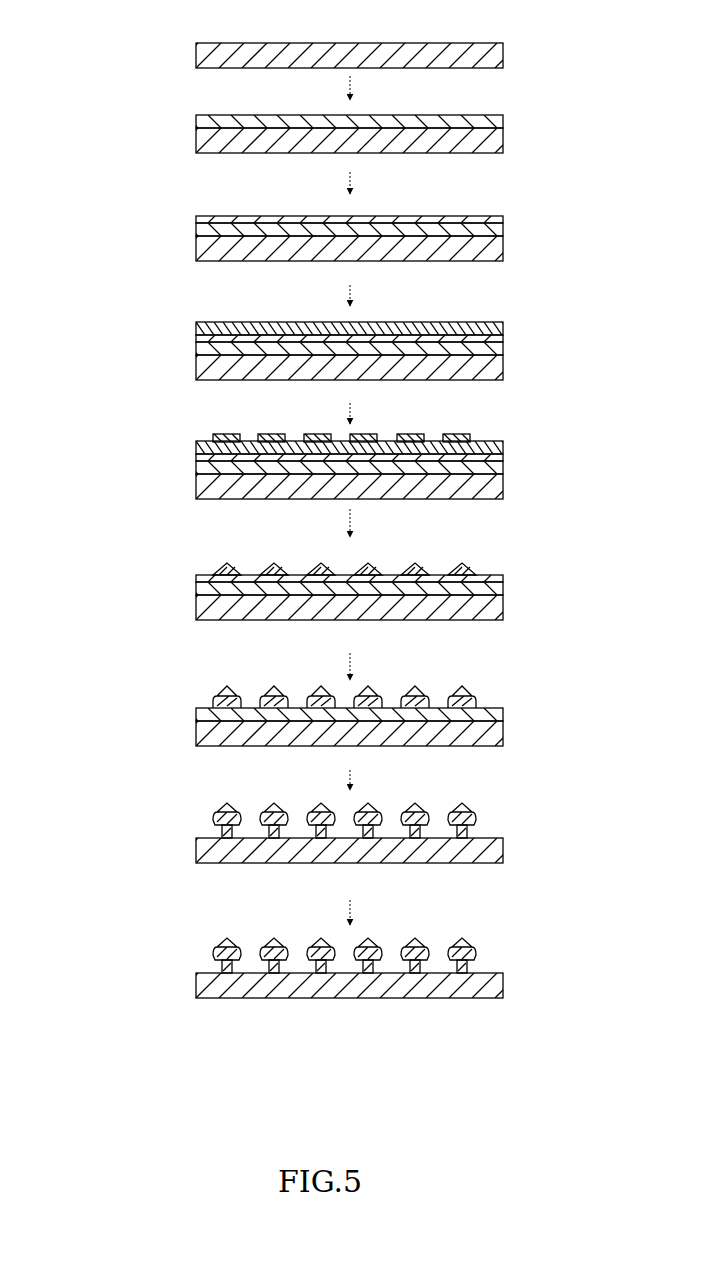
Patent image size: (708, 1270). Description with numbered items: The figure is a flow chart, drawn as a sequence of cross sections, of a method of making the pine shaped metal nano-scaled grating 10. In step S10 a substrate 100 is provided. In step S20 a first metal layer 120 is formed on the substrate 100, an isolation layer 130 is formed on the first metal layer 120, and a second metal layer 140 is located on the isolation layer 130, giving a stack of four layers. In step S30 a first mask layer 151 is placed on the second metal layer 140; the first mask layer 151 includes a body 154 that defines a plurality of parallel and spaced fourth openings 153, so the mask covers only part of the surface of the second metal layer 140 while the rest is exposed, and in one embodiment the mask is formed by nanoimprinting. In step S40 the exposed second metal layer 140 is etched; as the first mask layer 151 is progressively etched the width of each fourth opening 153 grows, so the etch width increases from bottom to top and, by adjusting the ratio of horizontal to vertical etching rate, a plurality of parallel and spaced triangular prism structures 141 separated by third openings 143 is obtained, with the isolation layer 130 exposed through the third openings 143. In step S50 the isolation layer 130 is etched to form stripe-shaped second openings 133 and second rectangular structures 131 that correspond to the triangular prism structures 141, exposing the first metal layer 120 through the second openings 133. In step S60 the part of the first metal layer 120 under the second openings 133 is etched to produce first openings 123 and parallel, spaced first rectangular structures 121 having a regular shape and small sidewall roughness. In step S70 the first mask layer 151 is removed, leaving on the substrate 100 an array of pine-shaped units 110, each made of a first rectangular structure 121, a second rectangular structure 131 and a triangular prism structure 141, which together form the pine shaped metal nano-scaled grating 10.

The pine shaped metal nano-scaled grating 10 is at (297, 1040).
The substrate 100 is at (393, 50).
The microstructure unit 110 is at (558, 917).
The first metal layer 120 is at (408, 117).
The first rectangular structures 121 is at (470, 838).
The first openings 123 is at (248, 830).
The isolation layer 130 is at (413, 215).
The second rectangular structures 131 is at (478, 705).
The second openings 133 is at (297, 706).
The second metal layer 140 is at (405, 325).
The triangular prism structures 141 is at (410, 570).
The third openings 143 is at (295, 570).
The first mask layer 151 is at (328, 406).
The fourth opening 153 is at (296, 437).
The body 154 is at (274, 432).
The step of providing a substrate S10 is at (157, 53).
The step of forming the layers S20 is at (157, 362).
The step of placing the first mask layer S30 is at (158, 460).
The step of etching the second metal layer S40 is at (158, 591).
The step of etching the isolation layer S50 is at (158, 725).
The step of etching the first metal layer S60 is at (158, 836).
The step of removing the first mask layer S70 is at (158, 971).